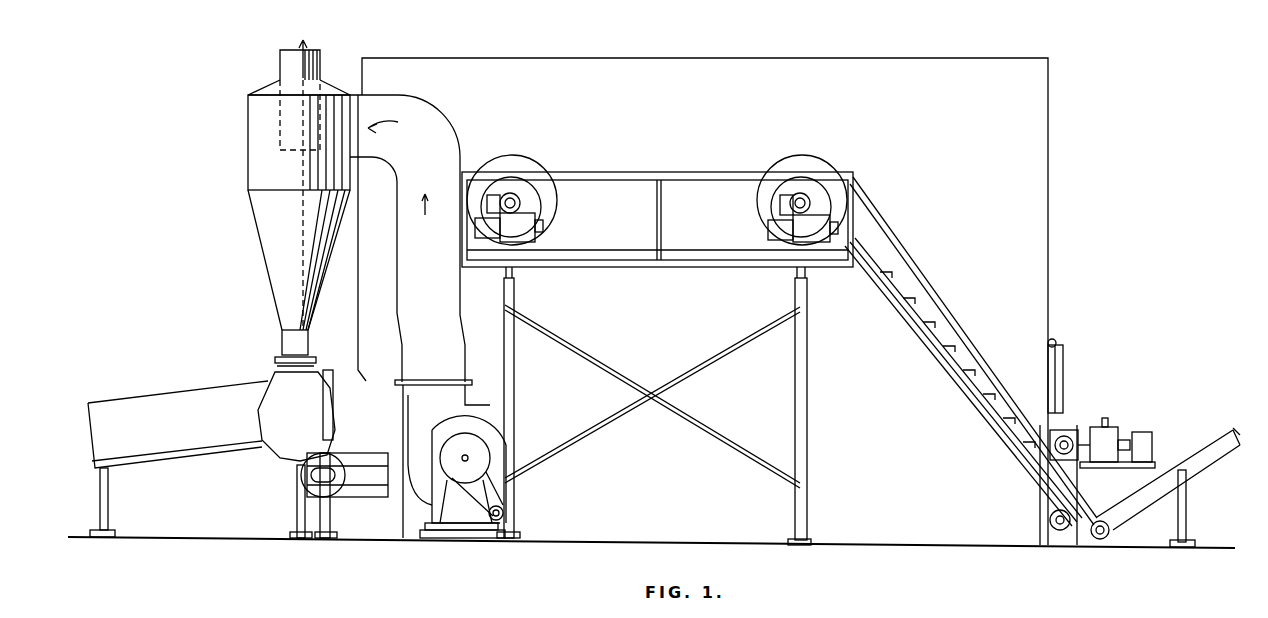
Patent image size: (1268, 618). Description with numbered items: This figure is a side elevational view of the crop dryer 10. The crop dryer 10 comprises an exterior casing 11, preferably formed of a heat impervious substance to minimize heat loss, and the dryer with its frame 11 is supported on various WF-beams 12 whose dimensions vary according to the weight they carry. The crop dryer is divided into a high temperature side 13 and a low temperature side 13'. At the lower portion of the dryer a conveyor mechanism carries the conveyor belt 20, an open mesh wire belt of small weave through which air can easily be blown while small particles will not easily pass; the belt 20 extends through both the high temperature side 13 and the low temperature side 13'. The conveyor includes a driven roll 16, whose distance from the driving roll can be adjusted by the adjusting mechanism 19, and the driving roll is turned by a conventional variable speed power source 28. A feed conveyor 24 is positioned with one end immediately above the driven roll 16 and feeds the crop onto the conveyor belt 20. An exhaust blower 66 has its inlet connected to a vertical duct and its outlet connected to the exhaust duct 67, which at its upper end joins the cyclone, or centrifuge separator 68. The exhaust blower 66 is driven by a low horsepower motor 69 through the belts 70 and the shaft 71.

The crop dryer 10 is at (1092, 154).
The exterior casing 11 is at (987, 118).
The WF-beams 12 is at (510, 396).
The high temperature side 13 is at (393, 238).
The low temperature side 13' is at (977, 361).
The driven roll 16 is at (312, 492).
The adjusting mechanism 19 is at (372, 476).
The conveyor belt 20 is at (355, 453).
The feed conveyor 24 is at (322, 378).
The variable speed power source 28 is at (1150, 425).
The exhaust blower 66 is at (410, 494).
The exhaust duct 67 is at (446, 302).
The cyclone separator 68 is at (268, 278).
The low horsepower motor 69 is at (495, 521).
The belts 70 is at (488, 503).
The shaft 71 is at (463, 457).